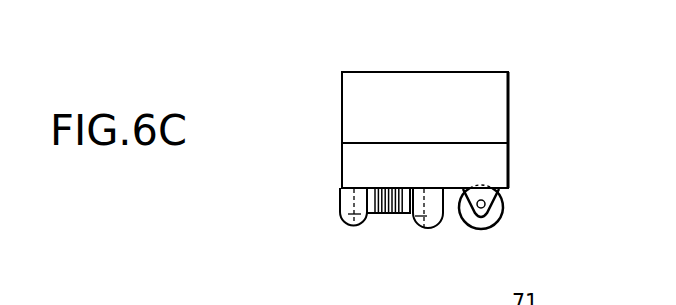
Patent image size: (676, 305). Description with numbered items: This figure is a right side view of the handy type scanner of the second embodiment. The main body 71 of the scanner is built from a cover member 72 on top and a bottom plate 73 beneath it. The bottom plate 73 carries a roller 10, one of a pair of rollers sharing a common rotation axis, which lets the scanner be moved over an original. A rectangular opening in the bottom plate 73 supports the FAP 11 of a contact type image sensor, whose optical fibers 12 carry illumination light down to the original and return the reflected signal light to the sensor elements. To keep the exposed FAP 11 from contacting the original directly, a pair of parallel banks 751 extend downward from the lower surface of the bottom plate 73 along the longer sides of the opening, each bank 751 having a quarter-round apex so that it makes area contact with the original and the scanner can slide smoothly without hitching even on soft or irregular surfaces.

The main body 71 is at (514, 65).
The cover member 72 is at (498, 96).
The bottom plate 73 is at (498, 163).
The roller 10 is at (504, 218).
The bank 751 is at (347, 221).
The FAP 11 is at (371, 214).
The optical fibers 12 is at (389, 214).